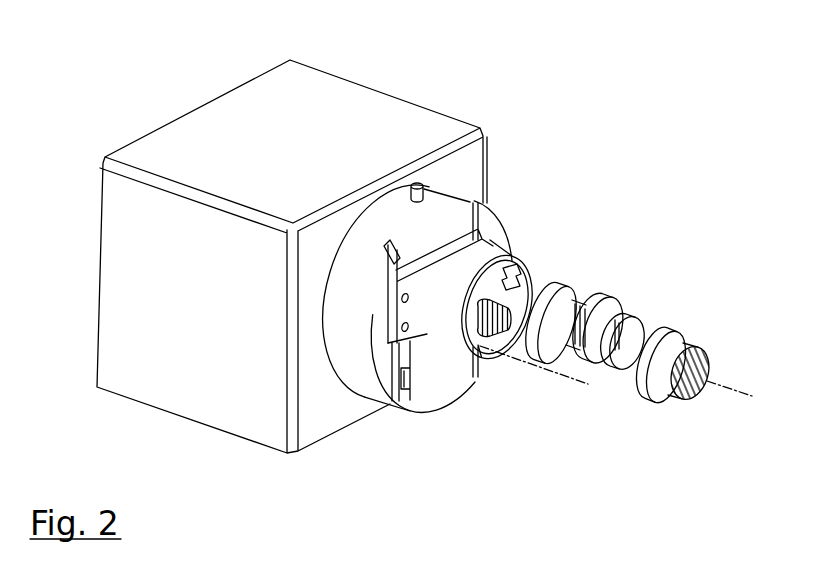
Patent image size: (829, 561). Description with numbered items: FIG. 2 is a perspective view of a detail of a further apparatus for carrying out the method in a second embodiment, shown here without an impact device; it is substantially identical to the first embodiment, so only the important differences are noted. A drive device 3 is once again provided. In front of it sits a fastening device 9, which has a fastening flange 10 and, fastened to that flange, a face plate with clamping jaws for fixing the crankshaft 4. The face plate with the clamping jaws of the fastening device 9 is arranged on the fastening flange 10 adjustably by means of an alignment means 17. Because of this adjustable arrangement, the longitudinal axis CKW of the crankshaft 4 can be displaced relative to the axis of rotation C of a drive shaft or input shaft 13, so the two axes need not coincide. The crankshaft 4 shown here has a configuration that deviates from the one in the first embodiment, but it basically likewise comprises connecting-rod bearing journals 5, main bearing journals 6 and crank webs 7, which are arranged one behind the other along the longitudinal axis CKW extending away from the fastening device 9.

The drive device 3 is at (440, 99).
The crankshaft 4 is at (641, 312).
The connecting-rod bearing journals 5 is at (593, 305).
The main bearing journals 6 is at (620, 333).
The crank webs 7 is at (603, 322).
The fastening device 9 is at (527, 258).
The fastening flange 10 is at (353, 378).
The input shaft 13 is at (385, 217).
The alignment means 17 is at (445, 405).
The axis of rotation C is at (569, 379).
The longitudinal axis of the crankshaft CKW is at (752, 397).